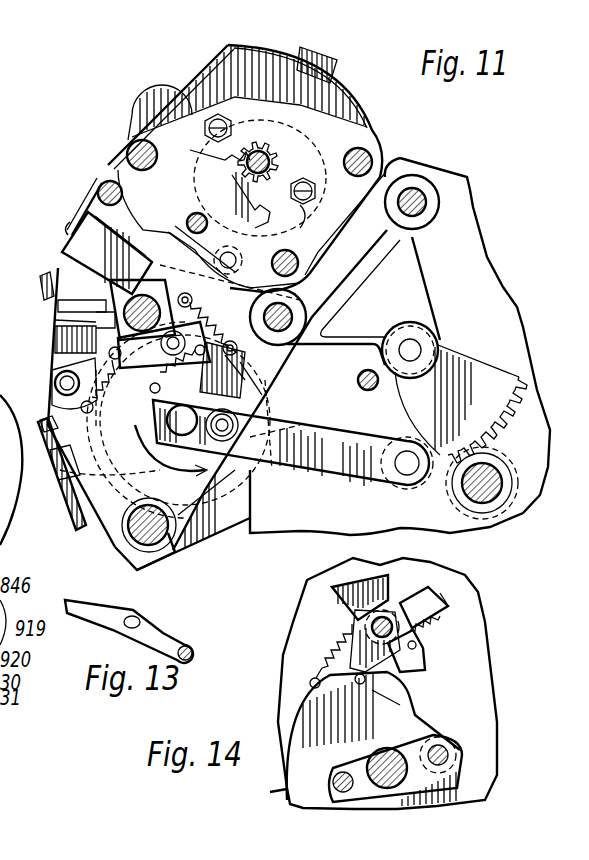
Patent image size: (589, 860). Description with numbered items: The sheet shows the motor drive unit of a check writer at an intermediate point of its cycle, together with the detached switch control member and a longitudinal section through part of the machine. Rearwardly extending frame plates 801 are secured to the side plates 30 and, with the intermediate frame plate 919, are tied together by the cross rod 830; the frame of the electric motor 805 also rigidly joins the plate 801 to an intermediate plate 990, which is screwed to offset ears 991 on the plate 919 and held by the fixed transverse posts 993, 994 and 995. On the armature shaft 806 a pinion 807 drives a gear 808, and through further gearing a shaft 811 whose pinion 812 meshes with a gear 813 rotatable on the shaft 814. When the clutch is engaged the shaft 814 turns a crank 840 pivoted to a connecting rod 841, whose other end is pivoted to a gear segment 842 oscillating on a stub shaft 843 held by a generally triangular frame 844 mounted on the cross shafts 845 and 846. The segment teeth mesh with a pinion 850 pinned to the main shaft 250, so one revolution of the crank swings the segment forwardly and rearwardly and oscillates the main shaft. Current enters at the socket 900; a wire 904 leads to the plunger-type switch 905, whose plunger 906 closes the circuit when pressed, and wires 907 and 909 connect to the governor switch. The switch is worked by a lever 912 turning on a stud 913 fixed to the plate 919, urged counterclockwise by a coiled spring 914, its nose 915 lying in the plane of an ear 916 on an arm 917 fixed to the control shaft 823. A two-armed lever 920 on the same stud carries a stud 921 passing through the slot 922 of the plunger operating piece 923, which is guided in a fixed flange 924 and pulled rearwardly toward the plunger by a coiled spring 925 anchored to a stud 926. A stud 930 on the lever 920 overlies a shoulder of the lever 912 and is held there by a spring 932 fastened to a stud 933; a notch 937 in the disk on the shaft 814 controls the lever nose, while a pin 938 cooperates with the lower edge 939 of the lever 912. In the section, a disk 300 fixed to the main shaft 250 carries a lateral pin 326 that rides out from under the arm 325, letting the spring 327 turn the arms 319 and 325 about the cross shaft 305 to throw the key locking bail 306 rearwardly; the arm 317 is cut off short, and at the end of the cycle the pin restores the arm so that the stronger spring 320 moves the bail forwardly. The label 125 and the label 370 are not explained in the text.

In FIG. 11, the side plates 30 is at (343, 364).
In FIG. 14, the side plates 30 is at (383, 683).
In FIG. 11, the pin 125 is at (365, 378).
In FIG. 11, the main shaft 250 is at (500, 490).
In FIG. 14, the main shaft 250 is at (380, 785).
In FIG. 14, the disk 300 is at (430, 735).
In FIG. 14, the cross shaft 305 is at (372, 627).
In FIG. 14, the key locking bail 306 is at (405, 608).
In FIG. 14, the arm 317 is at (428, 656).
In FIG. 14, the arm 319 is at (447, 598).
In FIG. 14, the spring 320 is at (432, 628).
In FIG. 14, the arm 325 is at (368, 679).
In FIG. 14, the lateral pin 326 is at (375, 690).
In FIG. 14, the spring 327 is at (340, 652).
In FIG. 14, the member 370 is at (405, 573).
In FIG. 11, the frame plate 801 is at (245, 505).
In FIG. 11, the electric motor 805 is at (274, 77).
In FIG. 11, the armature shaft 806 is at (258, 150).
In FIG. 11, the pinion 807 is at (276, 172).
In FIG. 11, the gear 808 is at (234, 185).
In FIG. 11, the shaft 811 is at (118, 297).
In FIG. 11, the pinion 812 is at (62, 255).
In FIG. 11, the gear 813 is at (243, 487).
In FIG. 11, the shaft 814 is at (199, 425).
In FIG. 11, the control shaft 823 is at (55, 383).
In FIG. 11, the cross rod 830 is at (117, 548).
In FIG. 11, the crank 840 is at (211, 516).
In FIG. 11, the connecting rod 841 is at (362, 438).
In FIG. 11, the gear segment 842 is at (461, 404).
In FIG. 11, the stub shaft 843 is at (412, 350).
In FIG. 11, the triangular frame 844 is at (403, 272).
In FIG. 11, the cross shaft 845 is at (417, 197).
In FIG. 11, the cross shaft 846 is at (292, 318).
In FIG. 11, the pinion 850 is at (492, 460).
In FIG. 11, the socket 900 is at (48, 422).
In FIG. 11, the wire 904 is at (48, 278).
In FIG. 11, the switch 905 is at (98, 220).
In FIG. 11, the plunger 906 is at (72, 240).
In FIG. 11, the wire 907 is at (108, 165).
In FIG. 11, the wire 909 is at (98, 185).
In FIG. 11, the lever 912 is at (55, 330).
In FIG. 11, the stud 913 is at (159, 357).
In FIG. 11, the coiled spring 914 is at (55, 402).
In FIG. 11, the nose 915 is at (55, 320).
In FIG. 11, the ear 916 is at (58, 306).
In FIG. 11, the arm 917 is at (58, 360).
In FIG. 11, the frame plate 919 is at (78, 498).
In FIG. 11, the two-armed lever 920 is at (250, 362).
In FIG. 11, the stud 921 is at (193, 304).
In FIG. 13, the slot 922 is at (140, 620).
In FIG. 11, the plunger operating piece 923 is at (192, 252).
In FIG. 13, the plunger operating piece 923 is at (105, 605).
In FIG. 11, the fixed flange 924 is at (100, 195).
In FIG. 11, the coiled spring 925 is at (212, 320).
In FIG. 11, the stud 926 is at (238, 348).
In FIG. 13, the stud 926 is at (190, 650).
In FIG. 11, the stud 930 is at (250, 378).
In FIG. 11, the spring 932 is at (143, 377).
In FIG. 11, the stud 933 is at (157, 448).
In FIG. 11, the notch 937 is at (150, 478).
In FIG. 11, the pin 938 is at (300, 410).
In FIG. 11, the lower edge 939 is at (262, 395).
In FIG. 11, the intermediate plate 990 is at (335, 130).
In FIG. 11, the offset ears 991 is at (288, 253).
In FIG. 11, the transverse post 993 is at (135, 140).
In FIG. 11, the transverse post 994 is at (362, 160).
In FIG. 11, the transverse post 995 is at (292, 213).